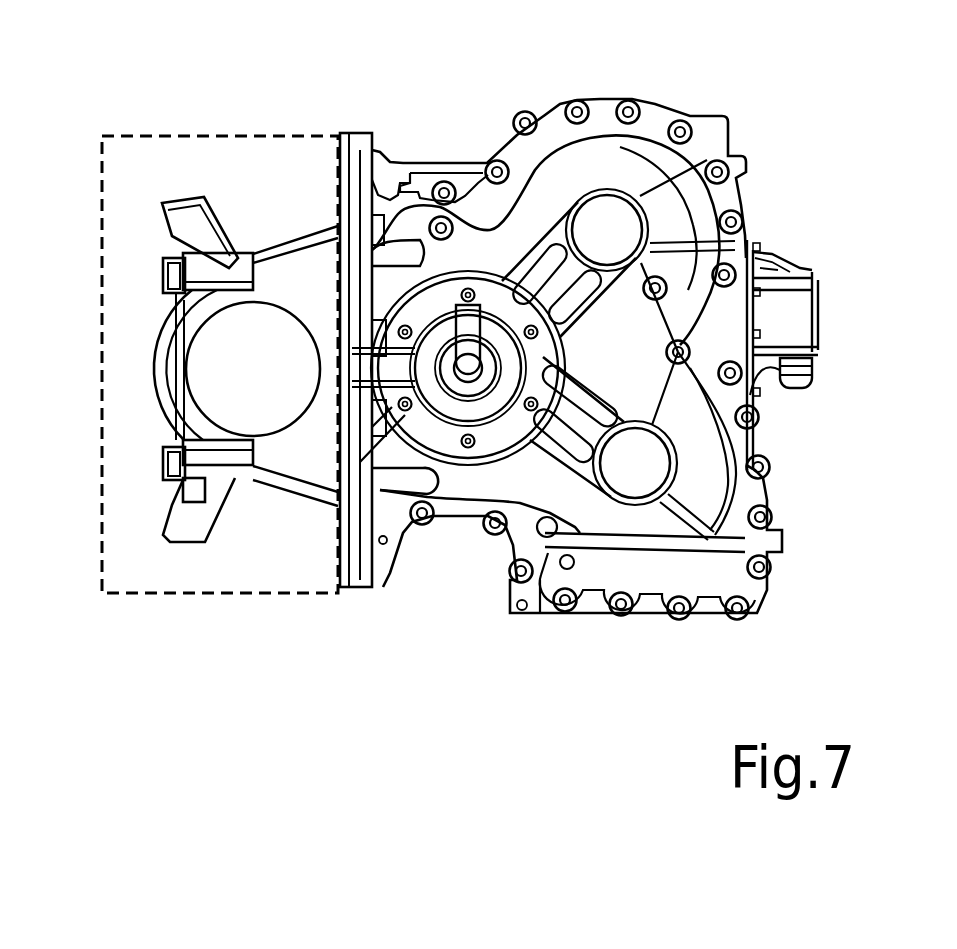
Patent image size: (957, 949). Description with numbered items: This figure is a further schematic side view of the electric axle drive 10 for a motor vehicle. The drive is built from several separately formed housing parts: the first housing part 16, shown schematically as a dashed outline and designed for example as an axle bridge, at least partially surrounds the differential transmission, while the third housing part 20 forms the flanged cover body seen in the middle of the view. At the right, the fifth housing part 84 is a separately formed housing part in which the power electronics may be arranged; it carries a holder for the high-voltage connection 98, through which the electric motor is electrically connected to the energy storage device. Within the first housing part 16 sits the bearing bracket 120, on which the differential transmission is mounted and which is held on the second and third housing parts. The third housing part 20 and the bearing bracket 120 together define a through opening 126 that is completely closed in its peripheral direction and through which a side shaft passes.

The electric axle drive 10 is at (718, 105).
The third housing part 20 is at (587, 165).
The fifth housing part 84 is at (788, 298).
The high-voltage connection 98 is at (819, 375).
The first housing part 16 is at (291, 596).
The bearing bracket 120 is at (190, 316).
The through openings 126 is at (270, 392).